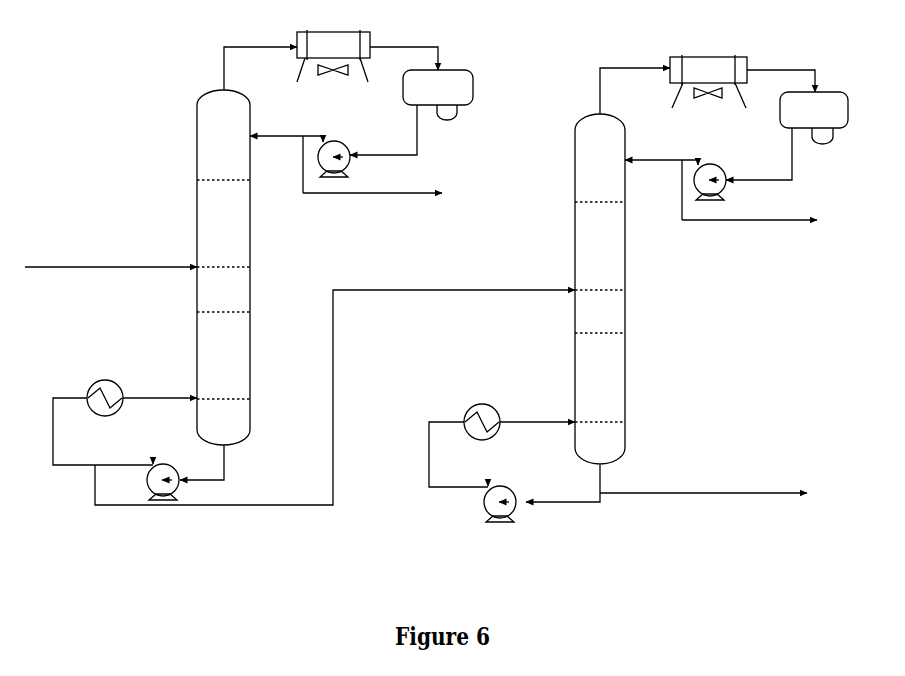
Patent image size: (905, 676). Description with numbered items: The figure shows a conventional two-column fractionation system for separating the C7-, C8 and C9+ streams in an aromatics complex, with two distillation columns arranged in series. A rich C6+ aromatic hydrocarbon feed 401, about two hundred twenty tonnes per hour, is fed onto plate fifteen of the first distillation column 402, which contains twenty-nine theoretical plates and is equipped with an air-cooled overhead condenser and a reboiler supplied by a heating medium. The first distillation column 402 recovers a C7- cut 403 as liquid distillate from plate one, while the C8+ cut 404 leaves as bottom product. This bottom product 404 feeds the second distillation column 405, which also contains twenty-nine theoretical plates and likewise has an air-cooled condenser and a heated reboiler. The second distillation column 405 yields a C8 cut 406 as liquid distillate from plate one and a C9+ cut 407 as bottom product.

The rich C6+ aromatic hydrocarbon feed stream 401 is at (111, 270).
The first distillation column 402 is at (197, 192).
The C7- cut stream 403 is at (409, 188).
The C8+ cut stream 404 is at (210, 505).
The second distillation column 405 is at (625, 353).
The C8 cut stream 406 is at (774, 222).
The C9+ cut stream 407 is at (723, 487).